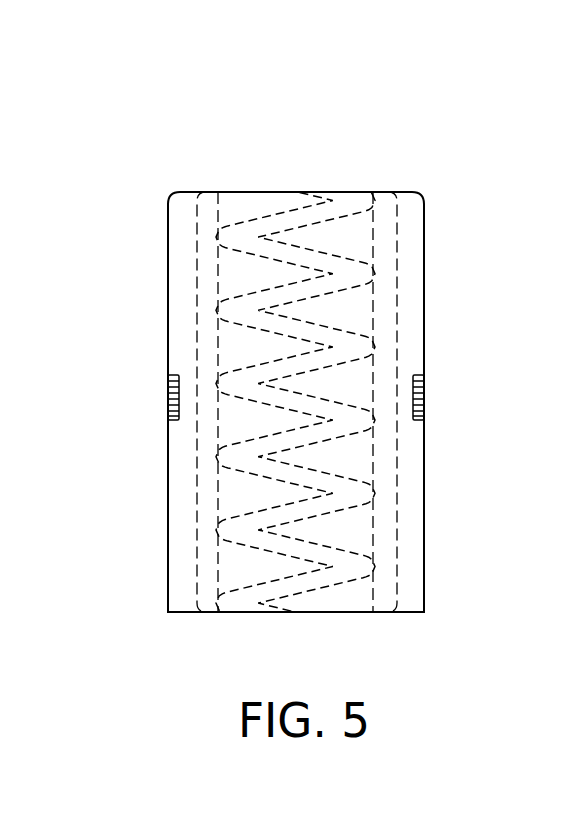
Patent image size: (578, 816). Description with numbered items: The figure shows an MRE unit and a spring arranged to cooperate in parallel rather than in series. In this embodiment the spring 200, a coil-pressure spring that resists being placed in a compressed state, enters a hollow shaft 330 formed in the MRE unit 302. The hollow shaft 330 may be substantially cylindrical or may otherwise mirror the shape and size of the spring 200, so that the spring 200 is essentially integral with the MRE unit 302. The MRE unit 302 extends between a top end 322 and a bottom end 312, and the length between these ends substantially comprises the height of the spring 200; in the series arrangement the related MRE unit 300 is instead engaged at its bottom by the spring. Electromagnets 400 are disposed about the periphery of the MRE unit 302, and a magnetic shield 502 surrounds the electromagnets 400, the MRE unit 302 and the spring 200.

The MRE unit 300 is at (118, 137).
The MRE unit 302 is at (270, 165).
The top end 322 is at (367, 190).
The bottom end 312 is at (262, 615).
The hollow shaft 330 is at (358, 324).
The spring 200 is at (225, 455).
The electromagnets 400 is at (172, 375).
The magnetic shield 502 is at (423, 485).